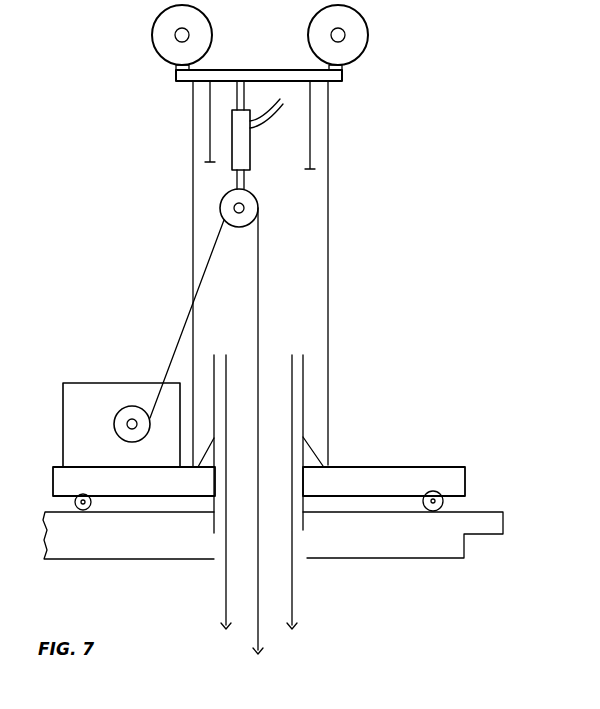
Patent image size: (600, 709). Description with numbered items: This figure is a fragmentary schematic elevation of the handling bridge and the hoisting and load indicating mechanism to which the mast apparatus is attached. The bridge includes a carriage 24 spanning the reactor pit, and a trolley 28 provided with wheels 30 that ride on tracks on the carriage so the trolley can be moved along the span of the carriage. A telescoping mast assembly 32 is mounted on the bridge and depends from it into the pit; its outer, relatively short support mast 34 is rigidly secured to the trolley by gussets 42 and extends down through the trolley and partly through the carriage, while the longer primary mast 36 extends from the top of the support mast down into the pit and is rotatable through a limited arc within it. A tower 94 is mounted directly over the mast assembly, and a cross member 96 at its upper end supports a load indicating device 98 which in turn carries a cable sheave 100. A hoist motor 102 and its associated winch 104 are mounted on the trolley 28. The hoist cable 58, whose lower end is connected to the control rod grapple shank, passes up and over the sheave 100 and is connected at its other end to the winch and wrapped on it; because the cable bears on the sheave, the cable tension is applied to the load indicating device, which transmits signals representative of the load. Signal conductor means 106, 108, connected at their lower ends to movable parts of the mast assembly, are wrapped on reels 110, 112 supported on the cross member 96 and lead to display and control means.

The carriage 24 is at (412, 516).
The trolley 28 is at (367, 467).
The wheels 30 is at (433, 511).
The telescoping mast assembly 32 is at (207, 569).
The support mast 34 is at (304, 386).
The primary mast 36 is at (292, 590).
The gussets 42 is at (312, 450).
The hoist cable 58 is at (259, 287).
The tower 94 is at (328, 220).
The cross member 96 is at (228, 70).
The load indicating device 98 is at (250, 140).
The cable sheave 100 is at (258, 206).
The hoist motor 102 is at (88, 383).
The winch 104 is at (128, 410).
The signal conductor means 106 is at (206, 118).
The signal conductor means 108 is at (310, 108).
The reel 110 is at (153, 30).
The reel 112 is at (366, 22).